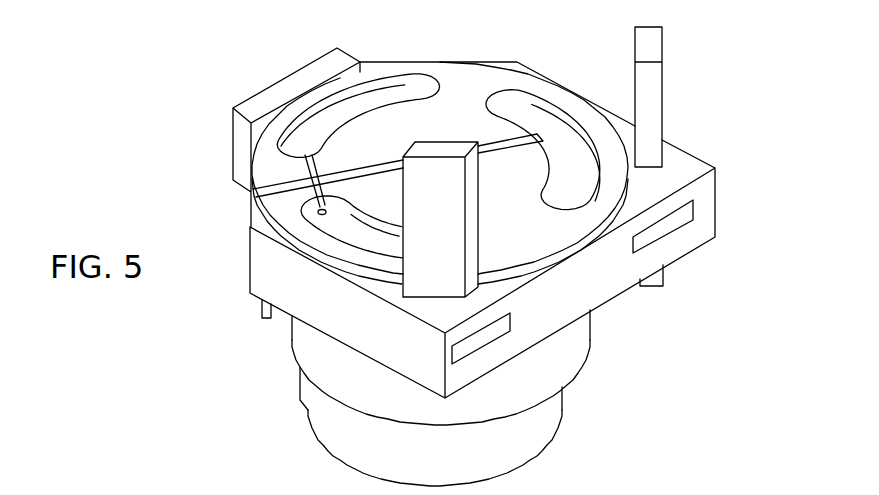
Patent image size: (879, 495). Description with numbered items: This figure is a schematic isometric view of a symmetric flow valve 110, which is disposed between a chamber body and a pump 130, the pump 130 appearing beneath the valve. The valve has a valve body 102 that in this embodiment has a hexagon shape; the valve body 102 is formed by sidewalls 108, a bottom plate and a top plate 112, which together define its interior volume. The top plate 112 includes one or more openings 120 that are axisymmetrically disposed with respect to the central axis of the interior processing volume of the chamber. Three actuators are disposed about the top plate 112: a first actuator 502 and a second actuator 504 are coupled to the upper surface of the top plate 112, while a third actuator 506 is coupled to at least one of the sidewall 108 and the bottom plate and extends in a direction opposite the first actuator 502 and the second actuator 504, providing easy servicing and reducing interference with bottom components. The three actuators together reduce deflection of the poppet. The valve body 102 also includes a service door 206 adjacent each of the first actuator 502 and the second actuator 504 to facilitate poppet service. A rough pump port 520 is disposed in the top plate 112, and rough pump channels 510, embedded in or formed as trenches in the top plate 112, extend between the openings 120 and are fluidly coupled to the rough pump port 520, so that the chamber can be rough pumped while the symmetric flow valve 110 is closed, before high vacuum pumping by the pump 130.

The valve body 102 is at (717, 200).
The sidewalls 108 is at (307, 93).
The symmetric flow valve 110 is at (215, 113).
The top plate 112 is at (497, 83).
The openings 120 is at (400, 92).
The pump 130 is at (291, 338).
The service door 206 is at (511, 313).
The first actuator 502 is at (662, 82).
The second actuator 504 is at (466, 217).
The third actuator 506 is at (262, 304).
The rough pump channels 510 is at (496, 135).
The rough pump port 520 is at (252, 193).